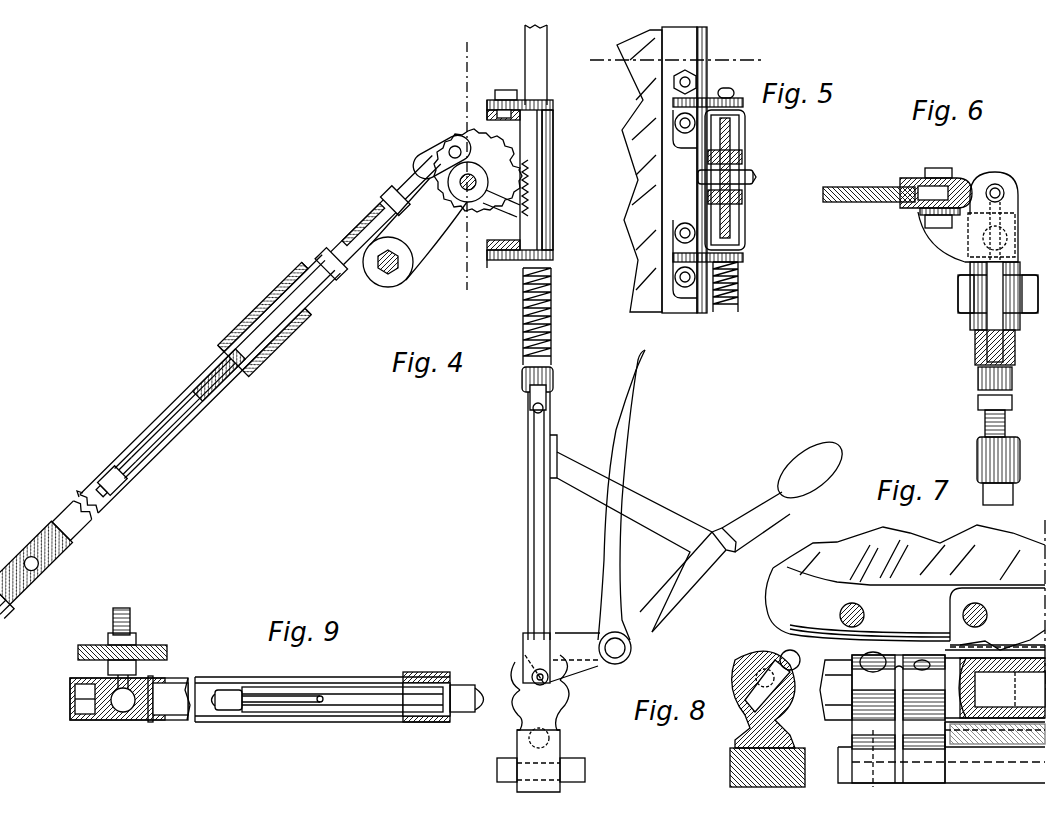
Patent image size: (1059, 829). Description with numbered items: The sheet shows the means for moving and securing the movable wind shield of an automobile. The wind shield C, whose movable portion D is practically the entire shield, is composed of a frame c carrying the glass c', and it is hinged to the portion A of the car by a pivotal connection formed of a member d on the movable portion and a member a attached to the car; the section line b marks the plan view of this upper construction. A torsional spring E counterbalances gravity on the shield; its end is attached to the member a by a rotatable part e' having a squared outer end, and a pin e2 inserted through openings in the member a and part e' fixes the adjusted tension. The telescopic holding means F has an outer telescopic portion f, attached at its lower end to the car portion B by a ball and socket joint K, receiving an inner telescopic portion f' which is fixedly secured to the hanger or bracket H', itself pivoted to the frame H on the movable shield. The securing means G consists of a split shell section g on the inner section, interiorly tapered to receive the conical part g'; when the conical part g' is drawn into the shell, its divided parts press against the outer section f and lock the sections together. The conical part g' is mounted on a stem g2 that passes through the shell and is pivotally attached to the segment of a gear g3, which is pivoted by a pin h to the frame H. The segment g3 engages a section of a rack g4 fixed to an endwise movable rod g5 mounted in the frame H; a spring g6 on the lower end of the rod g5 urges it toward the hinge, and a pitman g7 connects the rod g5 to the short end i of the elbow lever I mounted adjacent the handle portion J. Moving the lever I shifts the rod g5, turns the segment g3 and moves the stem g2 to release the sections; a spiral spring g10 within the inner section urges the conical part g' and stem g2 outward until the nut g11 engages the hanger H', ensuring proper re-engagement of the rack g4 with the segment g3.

In FIG. 4, the portion of the automobile A is at (533, 723).
In FIG. 7, the portion of the automobile A is at (941, 767).
In FIG. 8, the portion of the automobile A is at (754, 767).
In FIG. 9, the portion of the car B is at (122, 649).
In FIG. 5, the wind shield C is at (684, 170).
In FIG. 6, the wind shield C is at (937, 190).
In FIG. 4, the movable portion of the wind shield D is at (537, 351).
In FIG. 5, the movable portion of the wind shield D is at (639, 171).
In FIG. 6, the movable portion of the wind shield D is at (869, 182).
In FIG. 7, the movable portion of the wind shield D is at (909, 605).
In FIG. 7, the torsional spring E is at (995, 697).
In FIG. 4, the telescopic holding means F is at (209, 383).
In FIG. 9, the telescopic holding means F is at (339, 682).
In FIG. 4, the securing means G is at (160, 468).
In FIG. 9, the securing means G is at (281, 683).
In FIG. 4, the frame H is at (495, 184).
In FIG. 5, the frame H is at (685, 184).
In FIG. 6, the frame H is at (968, 217).
In FIG. 4, the hanger or bracket H' is at (415, 232).
In FIG. 4, the elbow lever I is at (621, 495).
In FIG. 4, the handle portion J is at (704, 532).
In FIG. 4, the ball and socket joint K is at (38, 569).
In FIG. 9, the ball and socket joint K is at (130, 690).
In FIG. 4, the hinge member a is at (529, 389).
In FIG. 7, the hinge member a is at (948, 755).
In FIG. 5, the section line b is at (677, 60).
In FIG. 4, the frame c is at (536, 65).
In FIG. 7, the frame c is at (857, 678).
In FIG. 5, the glass c' is at (648, 163).
In FIG. 7, the glass c' is at (905, 555).
In FIG. 7, the hinge member d is at (997, 619).
In FIG. 7, the rotatable part e' is at (990, 677).
In FIG. 8, the rotatable part e' is at (752, 699).
In FIG. 7, the pin e2 is at (882, 652).
In FIG. 8, the pin e2 is at (789, 654).
In FIG. 4, the outer telescopic portion f is at (76, 508).
In FIG. 4, the inner telescopic portion f' is at (284, 333).
In FIG. 6, the inner telescopic portion f' is at (1008, 471).
In FIG. 4, the split shell section g is at (335, 371).
In FIG. 9, the split shell section g is at (282, 675).
In FIG. 4, the conical part g' is at (122, 499).
In FIG. 9, the conical part g' is at (229, 679).
In FIG. 4, the stem or rod g2 is at (418, 182).
In FIG. 6, the stem or rod g2 is at (984, 422).
In FIG. 4, the segment of a gear g3 is at (478, 170).
In FIG. 5, the segment of a gear g3 is at (732, 141).
In FIG. 4, the section of a rack g4 is at (540, 180).
In FIG. 4, the endwise movable rod g5 is at (552, 128).
In FIG. 5, the endwise movable rod g5 is at (738, 302).
In FIG. 5, the spring g6 is at (742, 270).
In FIG. 4, the pitman g7 is at (535, 557).
In FIG. 4, the spiral spring g10 is at (230, 414).
In FIG. 4, the nut g11 is at (390, 199).
In FIG. 4, the pin h is at (471, 200).
In FIG. 5, the pin h is at (748, 178).
In FIG. 6, the pin h is at (957, 292).
In FIG. 4, the short end of the elbow lever i is at (574, 676).